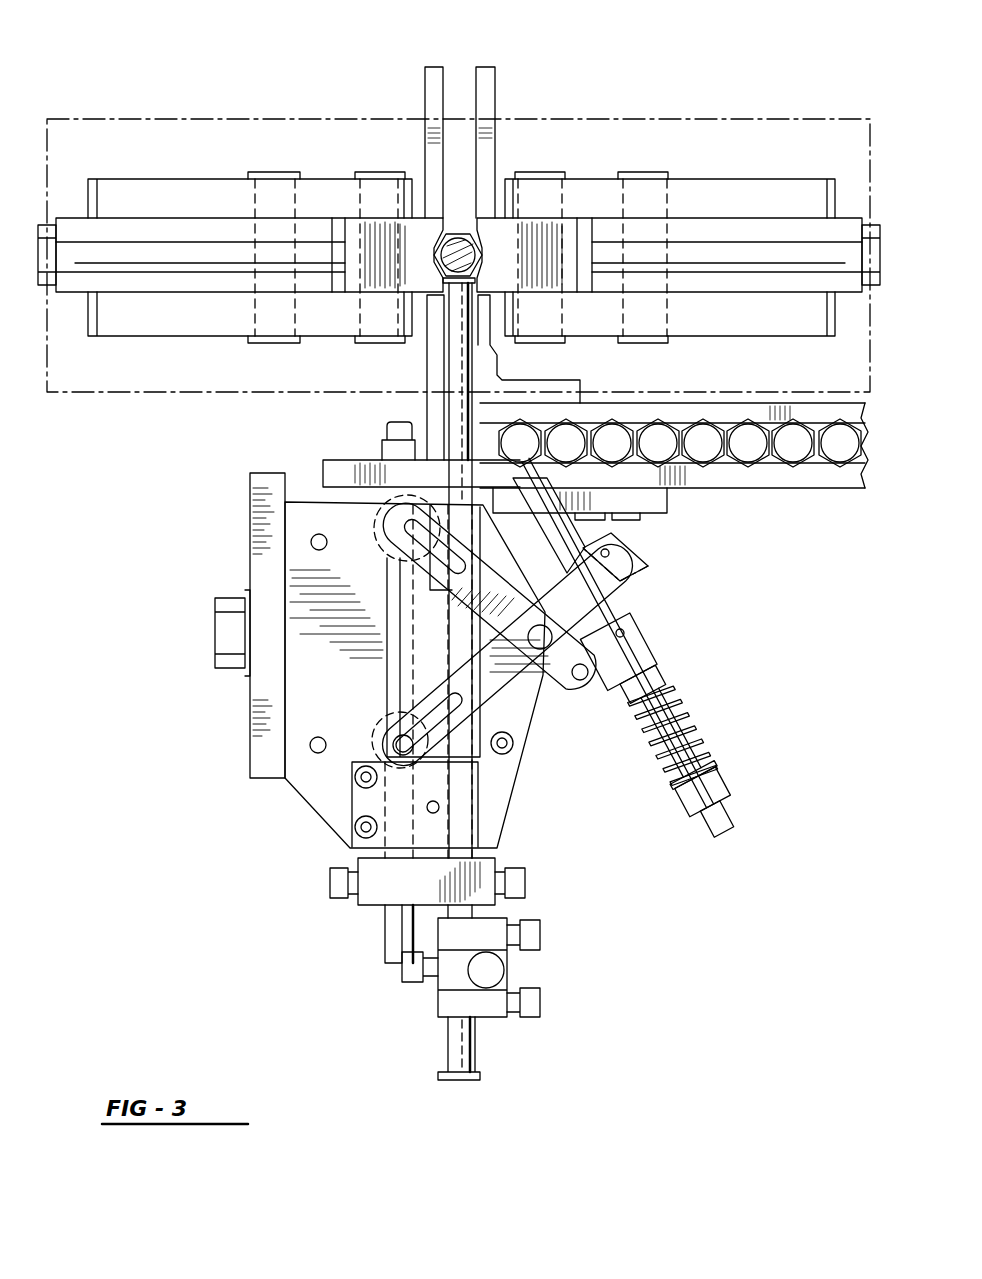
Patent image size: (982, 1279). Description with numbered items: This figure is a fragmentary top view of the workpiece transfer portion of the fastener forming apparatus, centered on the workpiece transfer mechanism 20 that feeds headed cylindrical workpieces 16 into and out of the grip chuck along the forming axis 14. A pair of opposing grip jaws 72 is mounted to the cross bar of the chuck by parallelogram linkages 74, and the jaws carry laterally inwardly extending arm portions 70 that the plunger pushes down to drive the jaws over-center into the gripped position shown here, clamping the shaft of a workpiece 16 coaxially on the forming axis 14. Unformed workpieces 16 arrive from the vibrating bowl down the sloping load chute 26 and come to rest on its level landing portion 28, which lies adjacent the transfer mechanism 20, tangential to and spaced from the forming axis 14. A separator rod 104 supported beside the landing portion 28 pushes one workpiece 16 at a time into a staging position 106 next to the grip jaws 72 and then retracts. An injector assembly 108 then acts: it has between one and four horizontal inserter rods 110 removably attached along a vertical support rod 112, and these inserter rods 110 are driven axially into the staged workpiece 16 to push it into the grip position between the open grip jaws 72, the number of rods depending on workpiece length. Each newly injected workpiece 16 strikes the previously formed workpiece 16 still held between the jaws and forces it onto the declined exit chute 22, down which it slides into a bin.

The forming axis 14 is at (458, 246).
The workpiece 16 is at (470, 258).
The workpiece transfer mechanism 20 is at (300, 808).
The exit chute 22 is at (428, 95).
The load chute 26 is at (791, 496).
The landing portion 28 is at (720, 478).
The arm portions 70 is at (420, 298).
The grip jaws 72 is at (418, 272).
The parallelogram linkages 74 is at (222, 195).
The separator rod 104 is at (710, 805).
The staging position 106 is at (453, 428).
The injector assembly 108 is at (500, 1023).
The inserter rods 110 is at (462, 1082).
The vertical support rod 112 is at (500, 965).